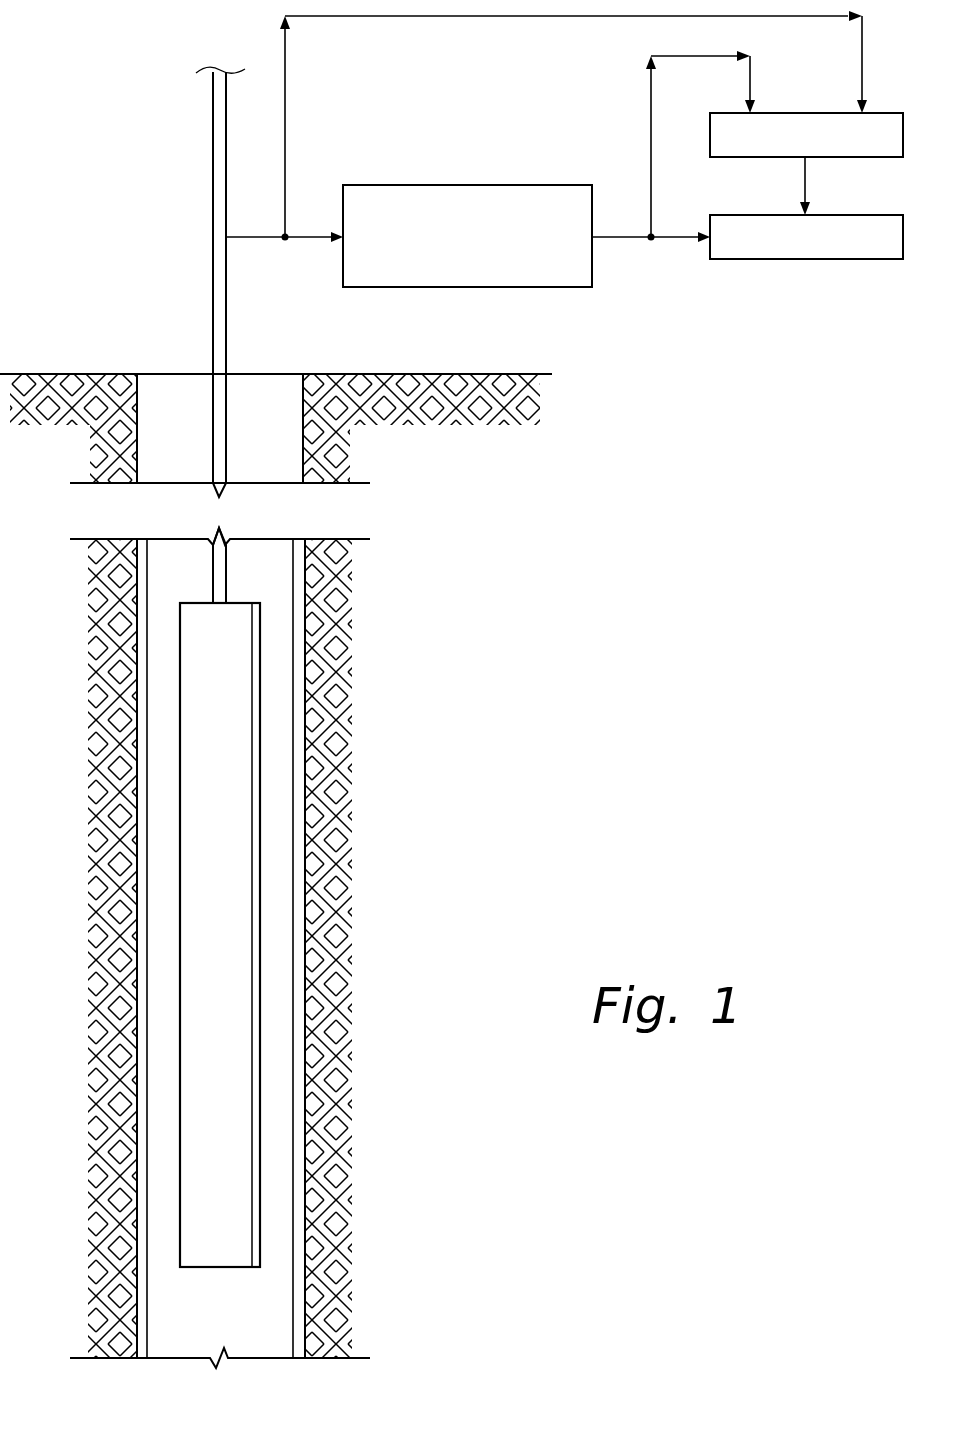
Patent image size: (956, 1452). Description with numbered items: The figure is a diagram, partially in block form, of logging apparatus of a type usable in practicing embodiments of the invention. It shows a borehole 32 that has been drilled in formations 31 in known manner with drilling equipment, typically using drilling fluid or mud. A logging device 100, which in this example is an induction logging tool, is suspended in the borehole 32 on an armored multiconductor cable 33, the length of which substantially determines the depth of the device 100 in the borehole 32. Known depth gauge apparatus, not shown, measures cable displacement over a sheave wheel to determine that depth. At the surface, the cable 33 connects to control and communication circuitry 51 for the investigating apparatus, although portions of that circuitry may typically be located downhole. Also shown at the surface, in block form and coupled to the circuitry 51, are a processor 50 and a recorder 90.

The formations 31 is at (335, 452).
The borehole 32 is at (181, 383).
The armored multiconductor cable 33 is at (213, 144).
The processor 50 is at (830, 259).
The control and communication circuitry 51 is at (497, 185).
The recorder 90 is at (797, 113).
The logging device 100 is at (276, 589).